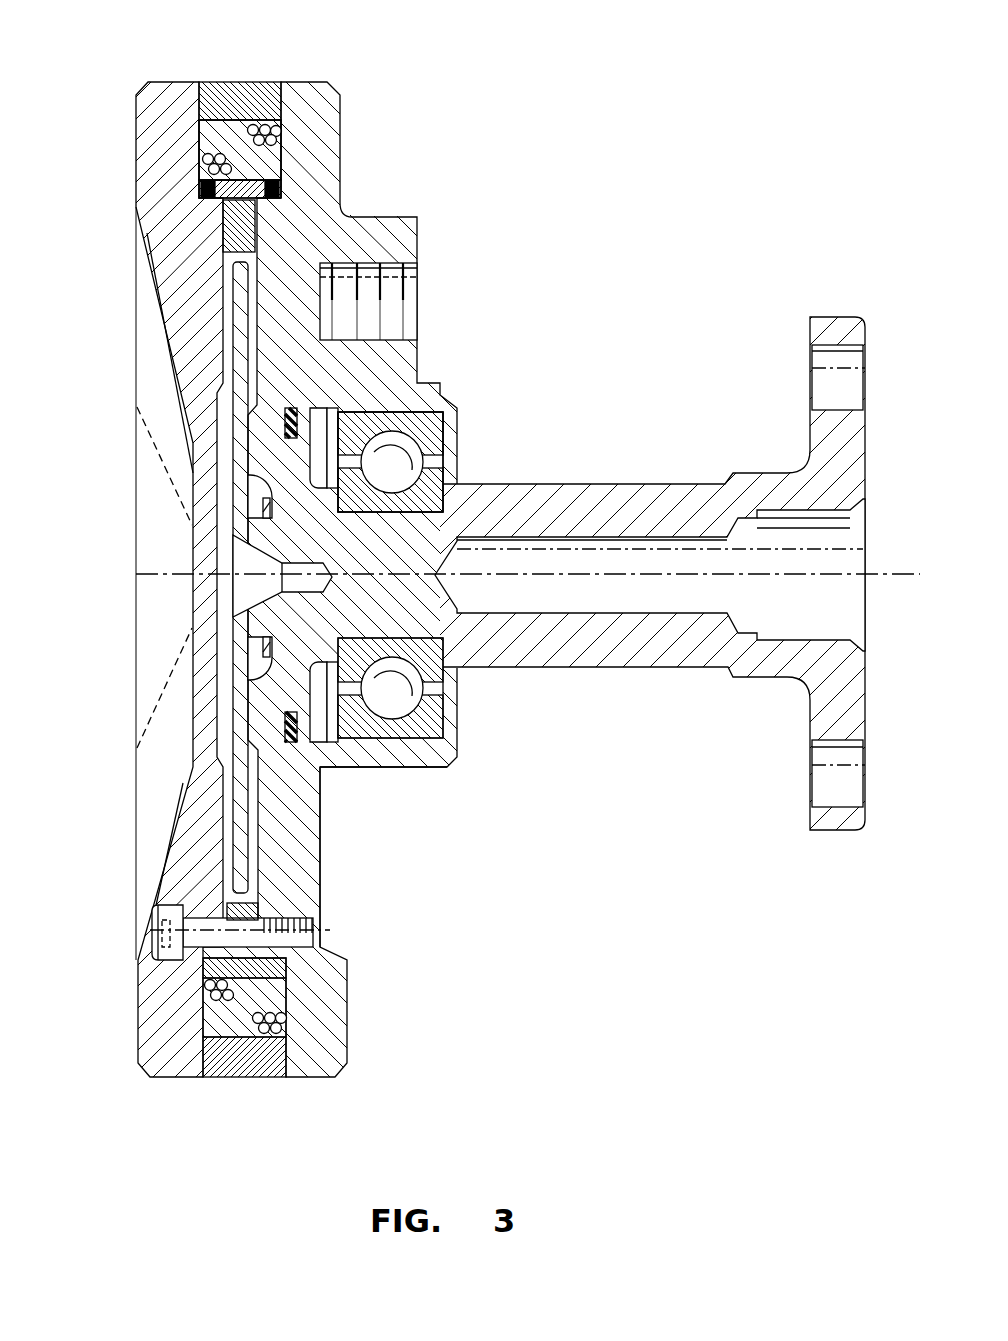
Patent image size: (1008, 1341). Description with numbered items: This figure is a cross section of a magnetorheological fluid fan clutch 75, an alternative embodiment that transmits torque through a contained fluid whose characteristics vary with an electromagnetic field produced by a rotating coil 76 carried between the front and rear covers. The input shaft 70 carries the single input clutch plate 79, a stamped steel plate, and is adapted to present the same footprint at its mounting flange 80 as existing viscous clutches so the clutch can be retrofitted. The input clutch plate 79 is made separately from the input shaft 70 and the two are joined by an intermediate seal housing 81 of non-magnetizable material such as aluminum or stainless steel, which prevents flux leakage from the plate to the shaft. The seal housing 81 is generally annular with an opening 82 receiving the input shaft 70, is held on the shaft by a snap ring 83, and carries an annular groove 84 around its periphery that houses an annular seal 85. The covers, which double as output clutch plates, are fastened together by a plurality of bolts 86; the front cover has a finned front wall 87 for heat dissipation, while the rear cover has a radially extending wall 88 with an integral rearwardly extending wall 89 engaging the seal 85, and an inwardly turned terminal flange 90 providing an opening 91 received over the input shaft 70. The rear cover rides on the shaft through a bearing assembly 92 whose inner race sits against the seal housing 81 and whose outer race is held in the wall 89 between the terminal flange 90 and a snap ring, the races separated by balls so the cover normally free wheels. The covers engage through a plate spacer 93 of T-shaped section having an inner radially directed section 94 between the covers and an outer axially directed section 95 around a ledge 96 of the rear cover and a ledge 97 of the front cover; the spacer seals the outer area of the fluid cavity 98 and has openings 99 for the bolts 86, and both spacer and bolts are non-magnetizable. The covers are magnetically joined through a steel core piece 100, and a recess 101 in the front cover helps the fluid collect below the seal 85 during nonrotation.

The input shaft 70 is at (600, 480).
The magnetorheological fluid fan clutch 75 is at (490, 138).
The rotating coil 76 is at (283, 148).
The input clutch plate 79 is at (233, 315).
The mounting flange 80 is at (810, 333).
The seal housing 81 is at (272, 476).
The opening 82 is at (440, 606).
The snap ring 83 is at (265, 655).
The annular groove 84 is at (302, 417).
The annular seal 85 is at (300, 738).
The bolts 86 is at (149, 916).
The finned front wall 87 is at (172, 832).
The radially extending wall 88 is at (320, 843).
The rearwardly extending wall 89 is at (413, 767).
The terminal flange 90 is at (457, 423).
The opening 91 is at (450, 452).
The bearing assembly 92 is at (418, 405).
The plate spacer 93 is at (214, 224).
The inner radially directed section 94 is at (384, 258).
The outer axially directed section 95 is at (202, 198).
The ledge 96 is at (280, 182).
The ledge 97 is at (202, 182).
The cavity 98 is at (233, 257).
The openings 99 is at (245, 920).
The core piece 100 is at (240, 82).
The recess 101 is at (215, 534).